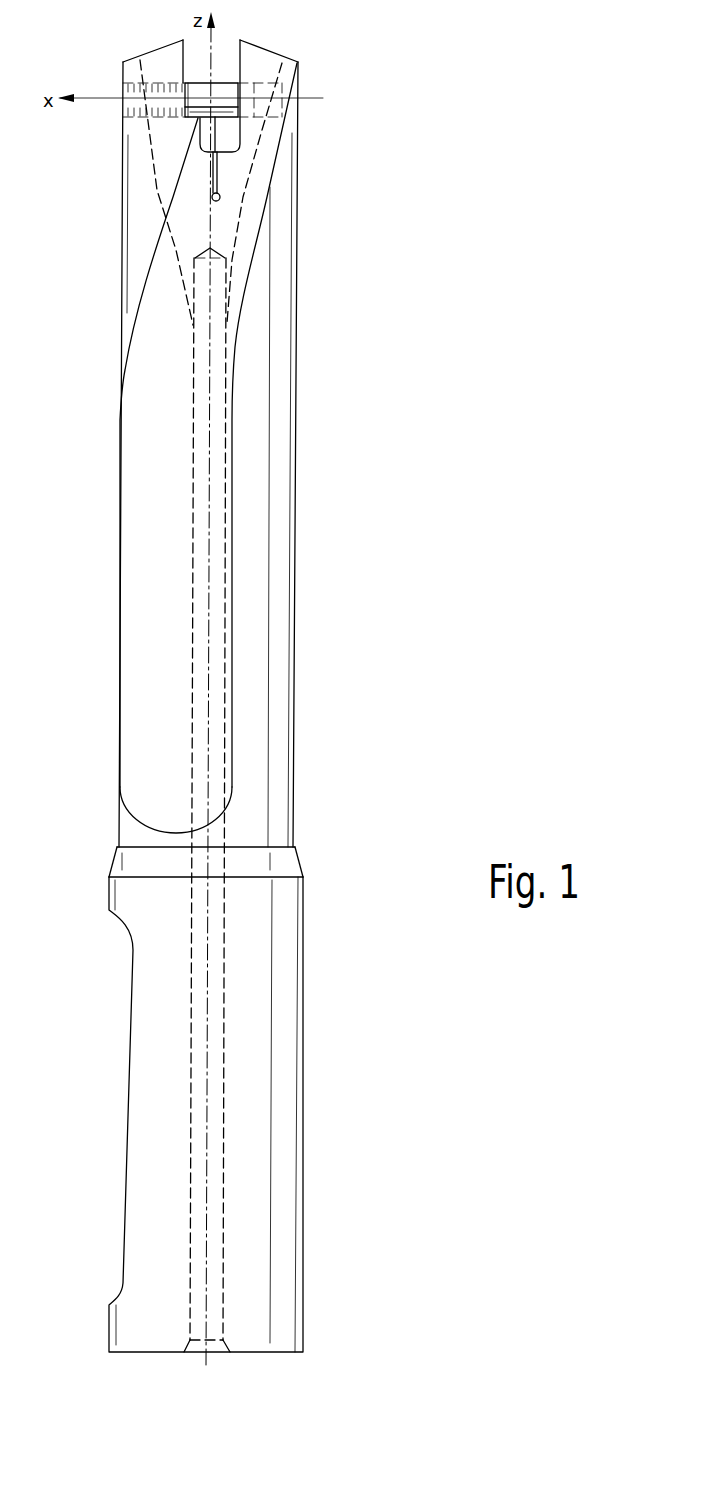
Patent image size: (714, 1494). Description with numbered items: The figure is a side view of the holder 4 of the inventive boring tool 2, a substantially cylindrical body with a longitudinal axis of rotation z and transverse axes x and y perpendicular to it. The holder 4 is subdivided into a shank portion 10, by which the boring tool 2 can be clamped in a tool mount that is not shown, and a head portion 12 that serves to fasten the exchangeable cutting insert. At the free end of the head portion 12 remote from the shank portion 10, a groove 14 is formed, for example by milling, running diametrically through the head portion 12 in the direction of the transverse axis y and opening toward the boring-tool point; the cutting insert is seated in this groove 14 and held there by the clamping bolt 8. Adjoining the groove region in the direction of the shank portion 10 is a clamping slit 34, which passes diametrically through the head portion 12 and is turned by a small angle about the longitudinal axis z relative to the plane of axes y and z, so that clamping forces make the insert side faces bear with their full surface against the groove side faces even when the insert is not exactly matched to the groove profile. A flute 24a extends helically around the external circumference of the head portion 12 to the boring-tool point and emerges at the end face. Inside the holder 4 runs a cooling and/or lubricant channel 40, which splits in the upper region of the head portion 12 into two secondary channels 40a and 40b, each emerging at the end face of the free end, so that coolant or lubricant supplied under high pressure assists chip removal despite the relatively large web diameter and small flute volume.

The boring tool 2 is at (336, 192).
The holder 4 is at (324, 660).
The clamping bolt 8 is at (228, 87).
The shank portion 10 is at (303, 1083).
The head portion 12 is at (298, 392).
The groove 14 is at (227, 50).
The flute 24a is at (150, 490).
The clamping slit 34 is at (212, 187).
The cooling and/or lubricant channel 40 is at (223, 557).
The secondary channel 40a is at (247, 232).
The secondary channel 40b is at (177, 247).